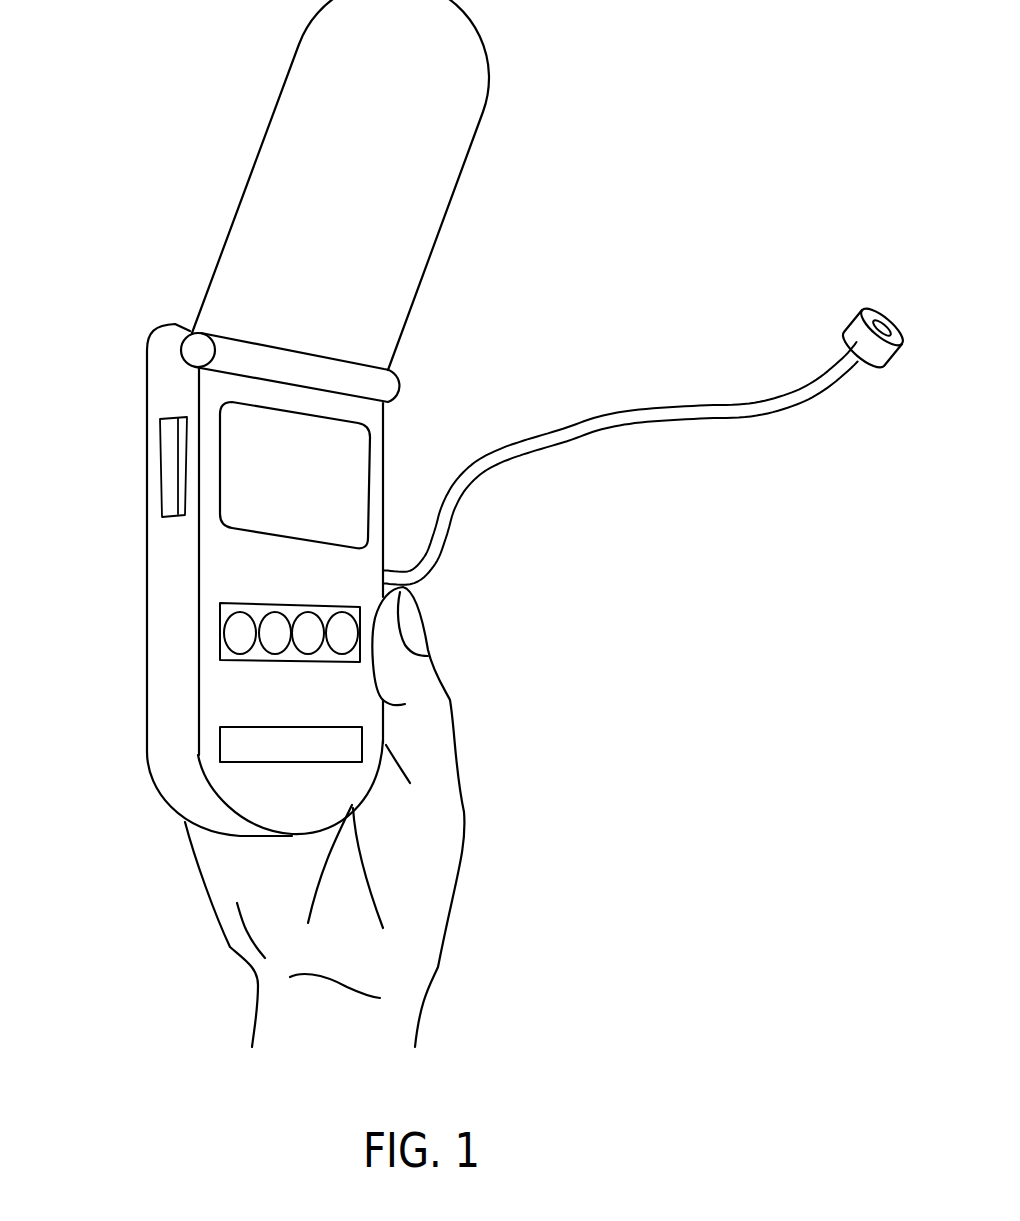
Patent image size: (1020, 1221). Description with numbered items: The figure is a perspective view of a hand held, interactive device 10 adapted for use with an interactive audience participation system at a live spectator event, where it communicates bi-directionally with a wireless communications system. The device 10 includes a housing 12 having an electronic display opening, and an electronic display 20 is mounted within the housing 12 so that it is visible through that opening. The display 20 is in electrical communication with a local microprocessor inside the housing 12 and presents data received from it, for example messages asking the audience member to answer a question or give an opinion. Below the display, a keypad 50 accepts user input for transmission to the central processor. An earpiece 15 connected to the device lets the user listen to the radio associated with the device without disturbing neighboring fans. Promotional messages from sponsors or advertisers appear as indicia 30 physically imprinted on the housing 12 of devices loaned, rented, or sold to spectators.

The hand held interactive device 10 is at (118, 350).
The housing 12 is at (155, 652).
The earpiece 15 is at (613, 428).
The electronic display 20 is at (370, 447).
The indicia 30 is at (222, 755).
The keypad 50 is at (220, 630).